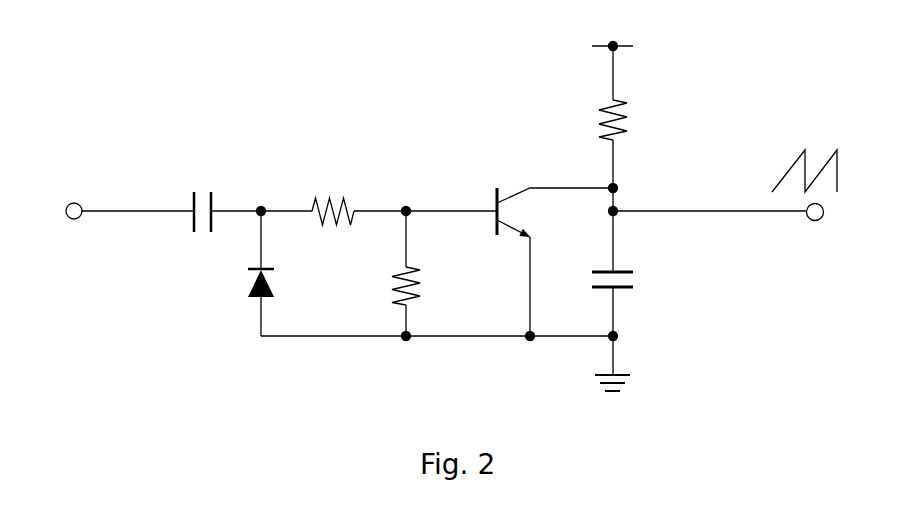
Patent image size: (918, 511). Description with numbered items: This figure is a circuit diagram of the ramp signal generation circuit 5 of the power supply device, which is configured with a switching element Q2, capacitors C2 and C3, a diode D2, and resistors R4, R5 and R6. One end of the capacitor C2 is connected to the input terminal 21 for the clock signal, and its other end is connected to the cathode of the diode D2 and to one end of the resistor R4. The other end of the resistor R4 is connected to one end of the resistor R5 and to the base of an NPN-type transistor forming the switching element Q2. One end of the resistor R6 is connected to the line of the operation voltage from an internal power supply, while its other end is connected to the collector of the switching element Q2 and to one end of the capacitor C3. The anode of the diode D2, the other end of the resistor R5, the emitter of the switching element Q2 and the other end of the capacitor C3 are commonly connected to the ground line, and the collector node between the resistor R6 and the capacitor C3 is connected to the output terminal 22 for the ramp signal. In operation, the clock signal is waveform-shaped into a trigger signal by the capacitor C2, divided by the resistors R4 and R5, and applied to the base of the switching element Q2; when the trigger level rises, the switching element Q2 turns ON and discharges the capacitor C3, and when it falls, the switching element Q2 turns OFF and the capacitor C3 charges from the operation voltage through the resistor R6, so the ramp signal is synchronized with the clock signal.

The ramp signal generation circuit 5 is at (405, 116).
The input terminal 21 is at (69, 204).
The output terminal 22 is at (817, 221).
The capacitor C2 is at (199, 200).
The resistor R4 is at (333, 199).
The diode D2 is at (243, 273).
The resistor R5 is at (389, 273).
The switching element Q2 is at (555, 244).
The resistor R6 is at (597, 148).
The capacitor C3 is at (596, 331).